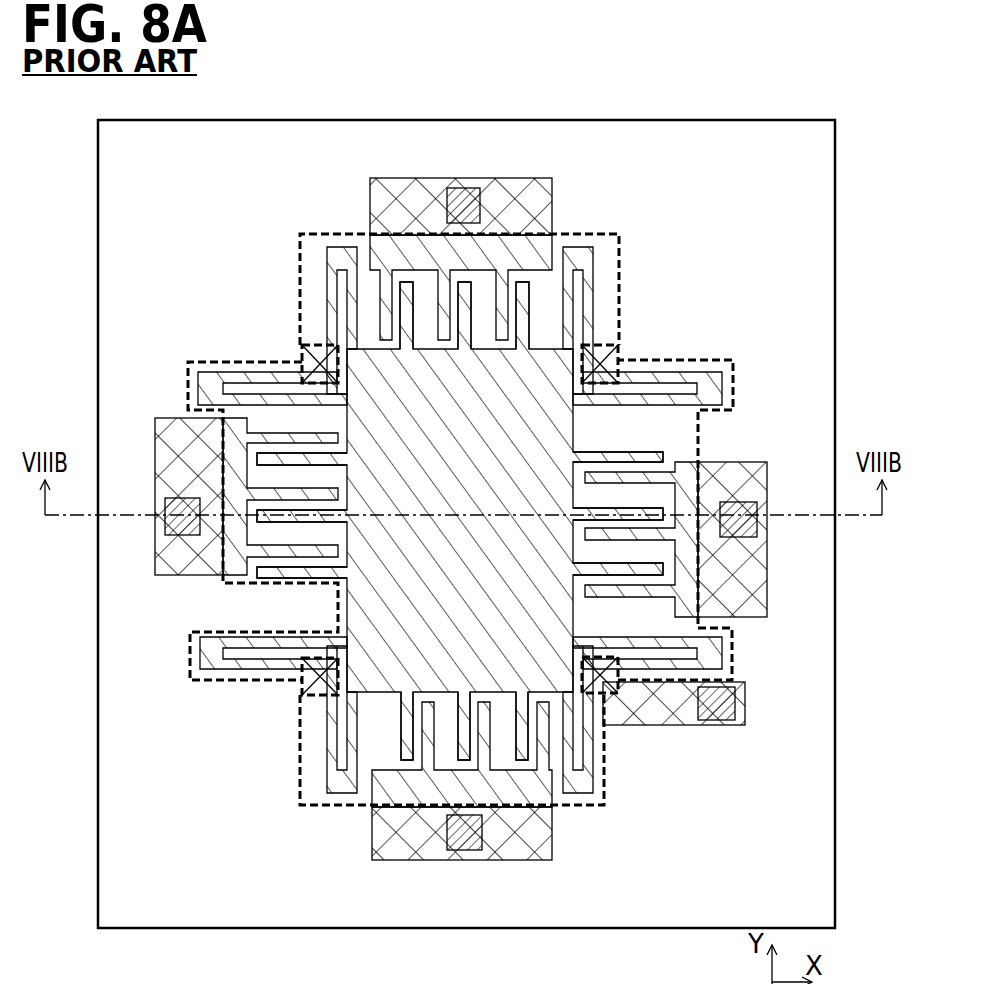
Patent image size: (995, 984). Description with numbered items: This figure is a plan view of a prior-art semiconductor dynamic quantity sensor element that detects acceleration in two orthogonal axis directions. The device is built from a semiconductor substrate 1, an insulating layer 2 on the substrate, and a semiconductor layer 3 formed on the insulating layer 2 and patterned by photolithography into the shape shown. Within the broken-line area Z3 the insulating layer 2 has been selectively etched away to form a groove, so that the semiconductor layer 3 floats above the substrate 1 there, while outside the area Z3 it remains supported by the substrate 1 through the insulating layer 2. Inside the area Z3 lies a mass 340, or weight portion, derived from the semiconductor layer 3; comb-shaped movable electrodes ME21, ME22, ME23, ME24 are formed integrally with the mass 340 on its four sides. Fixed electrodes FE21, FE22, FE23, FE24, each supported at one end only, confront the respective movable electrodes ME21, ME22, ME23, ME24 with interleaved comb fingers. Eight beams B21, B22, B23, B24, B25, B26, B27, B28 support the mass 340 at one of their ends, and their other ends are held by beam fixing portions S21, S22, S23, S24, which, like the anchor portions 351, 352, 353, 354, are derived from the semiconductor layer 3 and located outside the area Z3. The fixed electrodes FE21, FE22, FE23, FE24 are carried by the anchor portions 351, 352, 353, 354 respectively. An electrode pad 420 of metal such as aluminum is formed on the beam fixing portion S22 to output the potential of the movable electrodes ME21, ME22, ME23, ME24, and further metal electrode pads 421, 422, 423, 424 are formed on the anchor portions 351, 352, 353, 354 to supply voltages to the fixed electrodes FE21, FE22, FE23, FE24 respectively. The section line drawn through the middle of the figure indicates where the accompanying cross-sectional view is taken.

The semiconductor substrate 1 is at (98, 908).
The insulating layer 2 is at (130, 850).
The semiconductor layer 3 is at (210, 265).
The mass 340 is at (577, 423).
The anchor portion 351 is at (552, 855).
The anchor portion 352 is at (550, 178).
The anchor portion 353 is at (160, 418).
The anchor portion 354 is at (730, 462).
The electrode pad 420 is at (745, 705).
The electrode pad 421 is at (465, 855).
The electrode pad 422 is at (466, 188).
The electrode pad 423 is at (155, 530).
The electrode pad 424 is at (760, 535).
The beam B21 is at (325, 770).
The beam B22 is at (595, 775).
The beam B23 is at (327, 260).
The beam B24 is at (598, 288).
The beam B25 is at (210, 372).
The beam B26 is at (703, 368).
The beam B27 is at (266, 637).
The beam B28 is at (646, 638).
The beam fixing portion S21 is at (302, 683).
The beam fixing portion S22 is at (610, 693).
The beam fixing portion S23 is at (306, 348).
The beam fixing portion S24 is at (616, 352).
The fixed electrode FE21 is at (553, 762).
The fixed electrode FE22 is at (380, 290).
The fixed electrode FE23 is at (290, 437).
The fixed electrode FE24 is at (680, 612).
The movable electrode ME21 is at (400, 718).
The movable electrode ME22 is at (528, 294).
The movable electrode ME23 is at (254, 583).
The movable electrode ME24 is at (653, 451).
The area Z3 is at (603, 262).